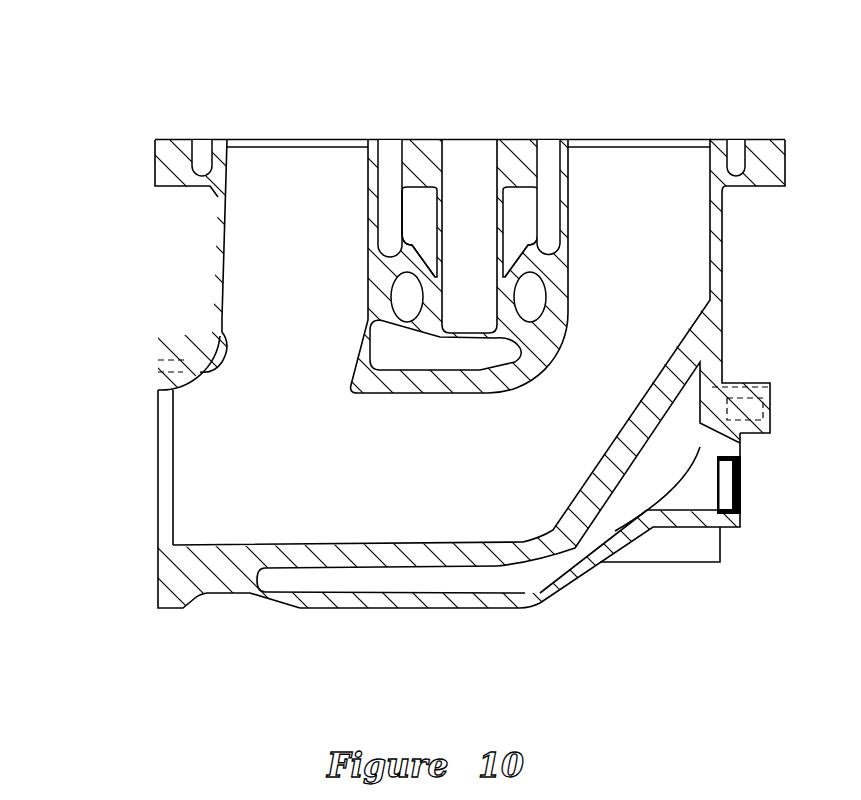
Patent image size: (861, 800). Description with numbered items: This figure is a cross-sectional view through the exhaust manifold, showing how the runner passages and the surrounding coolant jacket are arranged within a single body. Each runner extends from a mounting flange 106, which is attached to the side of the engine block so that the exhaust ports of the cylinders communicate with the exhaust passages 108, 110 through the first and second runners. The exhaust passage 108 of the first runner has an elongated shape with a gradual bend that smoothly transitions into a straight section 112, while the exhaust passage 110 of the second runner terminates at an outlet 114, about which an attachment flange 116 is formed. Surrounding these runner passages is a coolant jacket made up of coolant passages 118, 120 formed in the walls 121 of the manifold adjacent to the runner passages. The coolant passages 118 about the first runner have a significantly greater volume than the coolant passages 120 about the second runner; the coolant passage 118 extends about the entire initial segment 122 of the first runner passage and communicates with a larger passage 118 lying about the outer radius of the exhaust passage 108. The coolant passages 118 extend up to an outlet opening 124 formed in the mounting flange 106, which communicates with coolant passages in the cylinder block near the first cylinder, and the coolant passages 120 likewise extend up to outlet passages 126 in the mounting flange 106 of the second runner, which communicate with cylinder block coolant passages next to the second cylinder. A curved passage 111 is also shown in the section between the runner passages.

The mounting flange 106 is at (155, 160).
The exhaust passage 108 is at (658, 158).
The exhaust passage 110 is at (290, 155).
The curved passage 111 is at (453, 362).
The straight section 112 is at (410, 498).
The outlet 114 is at (167, 465).
The attachment flange 116 is at (165, 602).
The coolant passage 118 is at (542, 140).
The coolant passage 120 is at (388, 158).
The walls 121 is at (442, 598).
The initial segment 122 is at (710, 256).
The outlet opening 124 is at (552, 140).
The outlet passage 126 is at (400, 148).